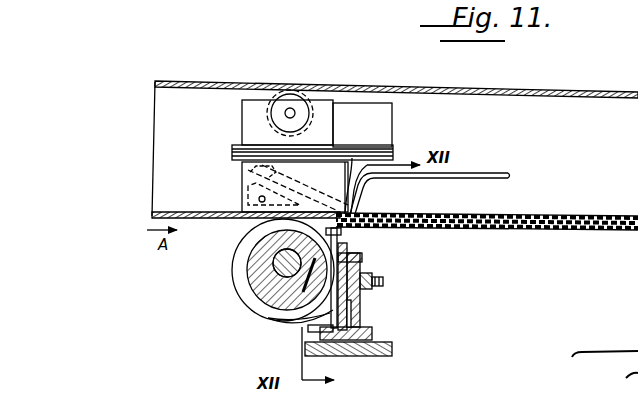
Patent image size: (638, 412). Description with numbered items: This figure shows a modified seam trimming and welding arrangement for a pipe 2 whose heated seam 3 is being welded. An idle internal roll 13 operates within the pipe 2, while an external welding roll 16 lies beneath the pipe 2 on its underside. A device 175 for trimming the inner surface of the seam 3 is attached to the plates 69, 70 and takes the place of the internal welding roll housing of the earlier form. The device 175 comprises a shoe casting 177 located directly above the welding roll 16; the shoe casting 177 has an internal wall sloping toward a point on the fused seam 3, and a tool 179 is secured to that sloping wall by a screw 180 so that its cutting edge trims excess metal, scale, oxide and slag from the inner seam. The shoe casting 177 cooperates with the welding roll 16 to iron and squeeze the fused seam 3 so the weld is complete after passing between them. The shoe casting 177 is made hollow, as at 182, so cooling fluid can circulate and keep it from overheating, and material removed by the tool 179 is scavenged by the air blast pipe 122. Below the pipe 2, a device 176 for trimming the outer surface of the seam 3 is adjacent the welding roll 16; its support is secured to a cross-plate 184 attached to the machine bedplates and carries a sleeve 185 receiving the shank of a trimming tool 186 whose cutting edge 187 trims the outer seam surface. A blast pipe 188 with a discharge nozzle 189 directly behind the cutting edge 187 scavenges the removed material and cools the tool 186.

The pipe 2 is at (593, 91).
The seam 3 is at (549, 229).
The idle internal roll 13 is at (281, 91).
The external welding roll 16 is at (246, 287).
The plate 69 is at (388, 122).
The plate 70 is at (385, 143).
The air blast pipe 122 is at (491, 173).
The inner seam trimming device 175 is at (242, 170).
The outer seam trimming device 176 is at (362, 302).
The shoe casting 177 is at (358, 206).
The trimming tool 179 is at (317, 199).
The screw 180 is at (247, 168).
The hollow of shoe casting 182 is at (248, 188).
The cross-plate 184 is at (393, 350).
The sleeve 185 is at (351, 318).
The trimming tool 186 is at (352, 241).
The cutting edge 187 is at (340, 232).
The blast pipe 188 is at (272, 319).
The discharge nozzle 189 is at (345, 224).